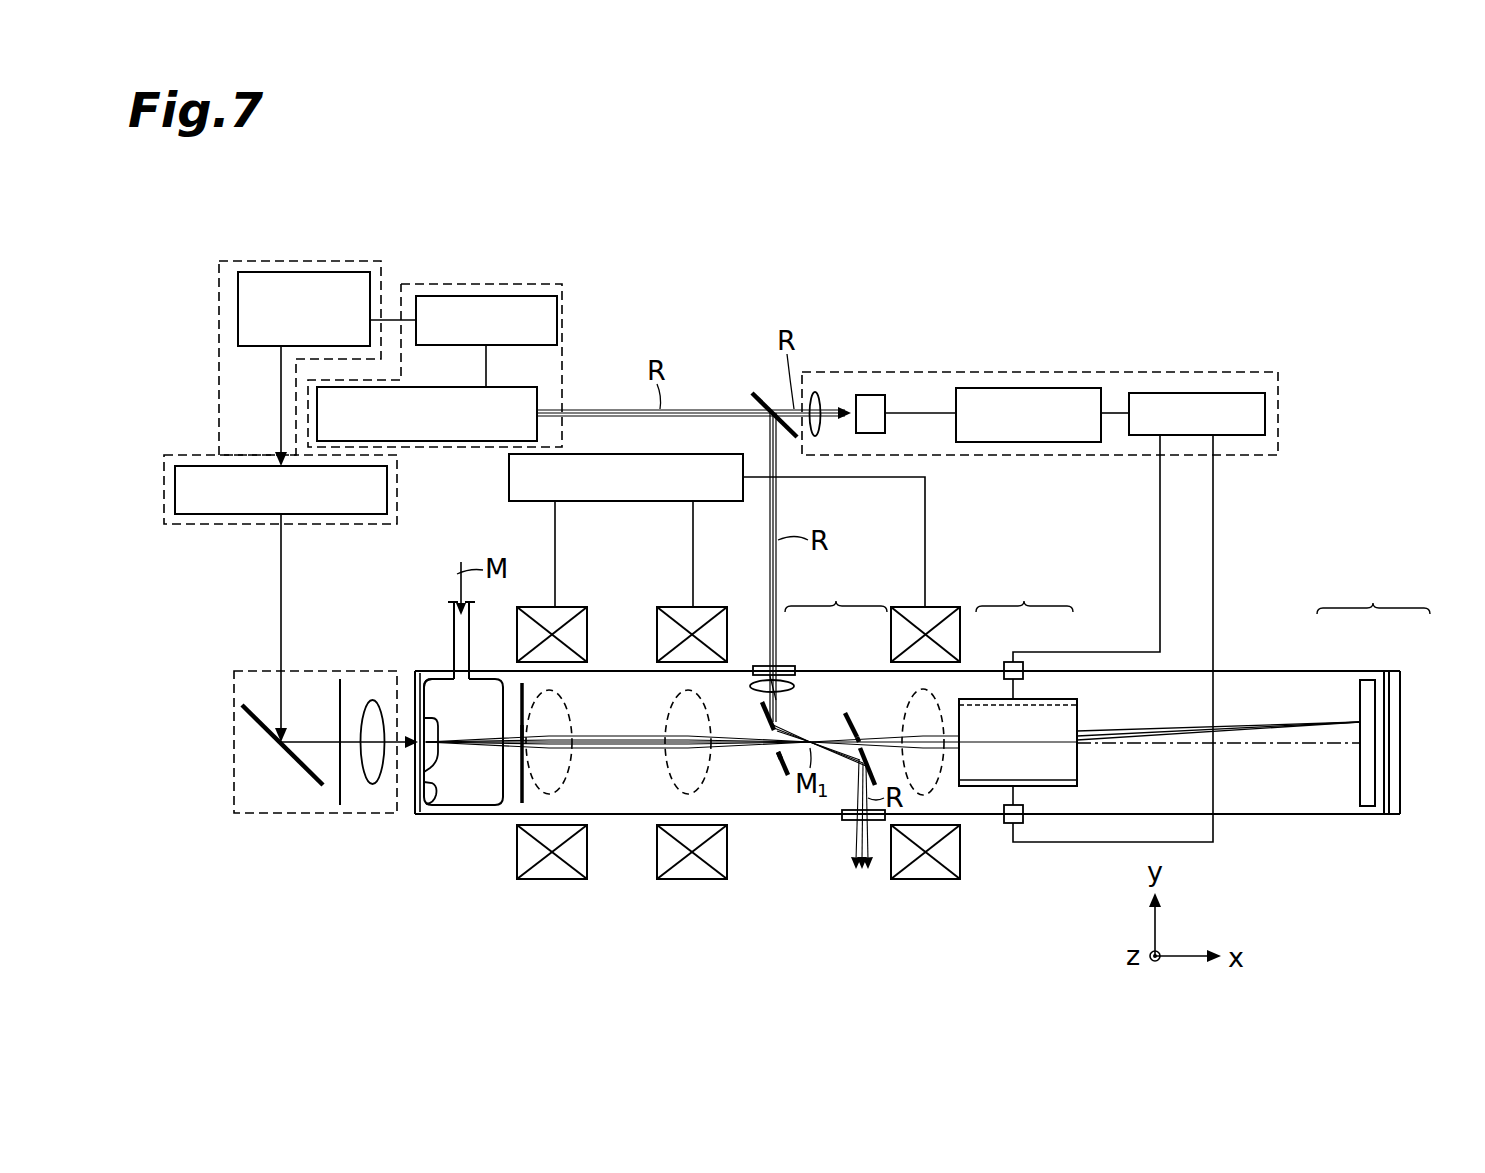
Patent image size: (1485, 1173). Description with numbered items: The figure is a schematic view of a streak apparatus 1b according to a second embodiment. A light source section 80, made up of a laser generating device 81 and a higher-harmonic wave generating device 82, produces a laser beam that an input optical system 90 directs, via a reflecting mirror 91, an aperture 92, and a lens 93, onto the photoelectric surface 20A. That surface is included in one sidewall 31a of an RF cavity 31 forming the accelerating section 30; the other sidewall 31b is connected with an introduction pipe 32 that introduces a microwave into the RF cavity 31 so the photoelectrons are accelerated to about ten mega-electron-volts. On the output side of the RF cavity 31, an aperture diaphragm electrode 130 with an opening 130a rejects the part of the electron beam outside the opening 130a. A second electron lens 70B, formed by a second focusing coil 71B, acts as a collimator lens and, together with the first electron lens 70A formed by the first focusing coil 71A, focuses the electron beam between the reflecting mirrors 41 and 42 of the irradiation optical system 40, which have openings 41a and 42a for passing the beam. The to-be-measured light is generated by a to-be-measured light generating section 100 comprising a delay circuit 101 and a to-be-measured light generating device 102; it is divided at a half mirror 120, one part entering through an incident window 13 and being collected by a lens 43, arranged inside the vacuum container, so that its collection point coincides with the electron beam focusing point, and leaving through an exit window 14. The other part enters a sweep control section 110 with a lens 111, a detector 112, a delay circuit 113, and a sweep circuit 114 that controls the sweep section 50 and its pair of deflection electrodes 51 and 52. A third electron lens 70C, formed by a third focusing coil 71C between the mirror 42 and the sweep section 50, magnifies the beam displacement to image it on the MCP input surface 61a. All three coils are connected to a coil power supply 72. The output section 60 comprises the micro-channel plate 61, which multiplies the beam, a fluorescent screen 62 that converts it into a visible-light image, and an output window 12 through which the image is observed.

The streak apparatus 1b is at (1366, 292).
The output window 12 is at (1401, 692).
The incident window 13 is at (760, 666).
The exit window 14 is at (847, 821).
The photoelectric surface 20A is at (442, 755).
The accelerating section 30 is at (463, 815).
The RF cavity 31 is at (469, 814).
The sidewall 31a is at (415, 814).
The sidewall 31b is at (430, 675).
The introduction pipe 32 is at (447, 613).
The irradiation optical system 40 is at (825, 678).
The reflecting mirror 41 is at (783, 757).
The opening 41a is at (778, 748).
The reflecting mirror 42 is at (855, 713).
The opening 42a is at (862, 738).
The lens 43 is at (798, 678).
The sweep section 50 is at (1018, 699).
The deflection electrode 51 is at (1050, 699).
The deflection electrode 52 is at (985, 699).
The output section 60 is at (1387, 723).
The micro-channel plate 61 is at (1364, 681).
The MCP input surface 61a is at (1360, 782).
The fluorescent screen 62 is at (1385, 669).
The first electron lens 70A is at (667, 761).
The second electron lens 70B is at (571, 761).
The third electron lens 70C is at (935, 785).
The first focusing coil 71A is at (706, 607).
The second focusing coil 71B is at (576, 607).
The third focusing coil 71C is at (948, 607).
The coil power supply 72 is at (655, 452).
The light source section 80 is at (309, 261).
The laser generating device 81 is at (238, 313).
The higher-harmonic wave generating device 82 is at (175, 493).
The input optical system 90 is at (232, 725).
The reflecting mirror 91 is at (317, 781).
The aperture 92 is at (340, 693).
The lens 93 is at (373, 781).
The to-be-measured light generating section 100 is at (490, 284).
The delay circuit 101 is at (545, 322).
The to-be-measured light generating device 102 is at (445, 441).
The sweep control section 110 is at (1112, 372).
The lens 111 is at (817, 392).
The detector 112 is at (874, 395).
The delay circuit 113 is at (1003, 388).
The sweep circuit 114 is at (1210, 393).
The half mirror 120 is at (757, 393).
The aperture diaphragm electrode 130 is at (518, 803).
The opening 130a is at (517, 733).